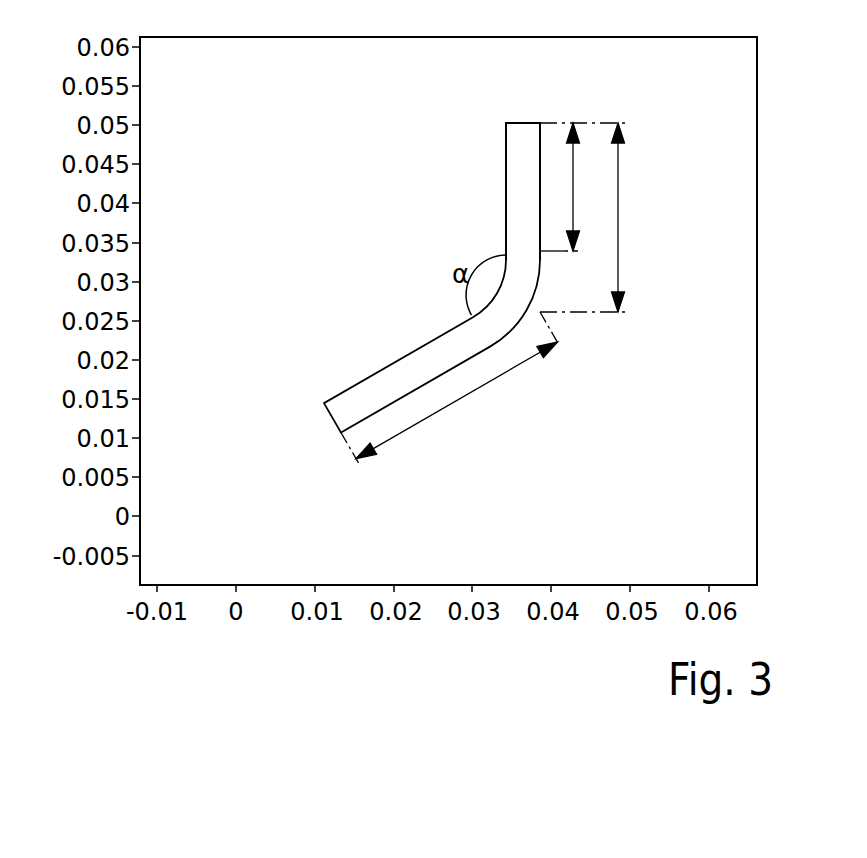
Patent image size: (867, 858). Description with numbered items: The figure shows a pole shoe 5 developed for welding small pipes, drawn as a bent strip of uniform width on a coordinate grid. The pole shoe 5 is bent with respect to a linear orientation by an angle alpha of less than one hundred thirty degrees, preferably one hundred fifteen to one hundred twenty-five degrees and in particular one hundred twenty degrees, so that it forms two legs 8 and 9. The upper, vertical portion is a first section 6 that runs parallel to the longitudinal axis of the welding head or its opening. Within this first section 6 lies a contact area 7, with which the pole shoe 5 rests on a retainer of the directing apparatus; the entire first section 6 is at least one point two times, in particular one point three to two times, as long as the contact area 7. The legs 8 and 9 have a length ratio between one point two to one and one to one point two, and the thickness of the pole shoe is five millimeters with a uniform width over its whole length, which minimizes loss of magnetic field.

The pole shoe 5 is at (452, 190).
The first section 6 is at (520, 217).
The contact area 7 is at (582, 187).
The leg 8 is at (590, 217).
The leg 9 is at (449, 389).